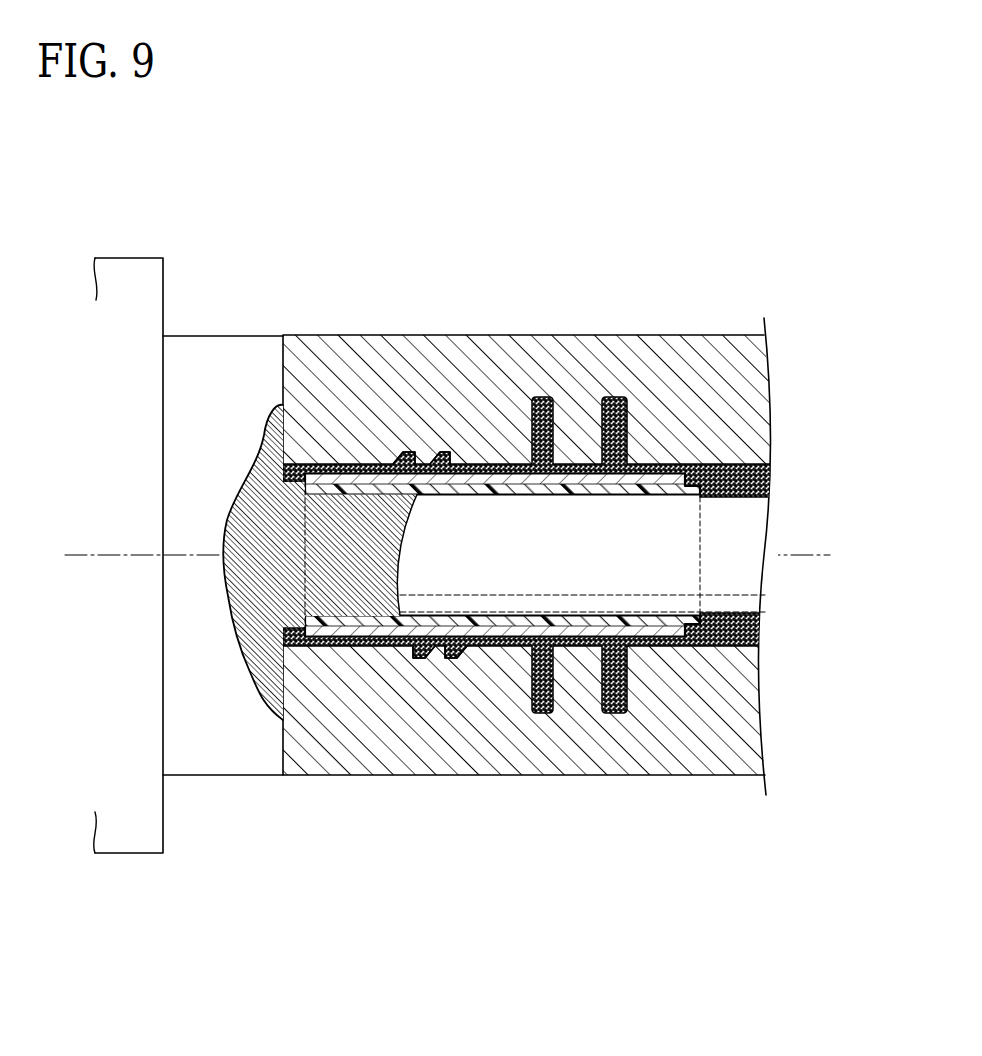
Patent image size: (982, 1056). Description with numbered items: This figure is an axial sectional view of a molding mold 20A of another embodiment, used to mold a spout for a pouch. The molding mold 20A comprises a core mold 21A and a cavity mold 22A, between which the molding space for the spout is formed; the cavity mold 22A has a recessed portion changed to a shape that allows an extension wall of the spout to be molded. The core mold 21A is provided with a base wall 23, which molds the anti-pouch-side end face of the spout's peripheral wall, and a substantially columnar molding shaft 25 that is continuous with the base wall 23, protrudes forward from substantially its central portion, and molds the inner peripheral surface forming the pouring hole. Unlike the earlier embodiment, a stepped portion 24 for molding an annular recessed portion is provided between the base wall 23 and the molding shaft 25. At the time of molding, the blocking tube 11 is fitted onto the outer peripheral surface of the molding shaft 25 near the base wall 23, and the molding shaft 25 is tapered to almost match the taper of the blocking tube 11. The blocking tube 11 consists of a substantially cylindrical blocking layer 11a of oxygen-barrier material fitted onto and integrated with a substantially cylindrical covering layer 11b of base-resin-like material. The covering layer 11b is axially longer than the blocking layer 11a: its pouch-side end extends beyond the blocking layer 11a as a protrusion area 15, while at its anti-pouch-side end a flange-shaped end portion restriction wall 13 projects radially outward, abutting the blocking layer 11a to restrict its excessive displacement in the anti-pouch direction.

The molding mold 20A is at (697, 284).
The core mold 21A is at (218, 777).
The cavity mold 22A is at (597, 777).
The base wall 23 is at (234, 338).
The stepped portion 24 is at (297, 622).
The molding shaft 25 is at (741, 527).
The blocking tube 11 is at (467, 474).
The blocking layer 11a is at (373, 476).
The covering layer 11b is at (398, 476).
The end portion restriction wall 13 is at (328, 647).
The protrusion area 15 is at (702, 630).